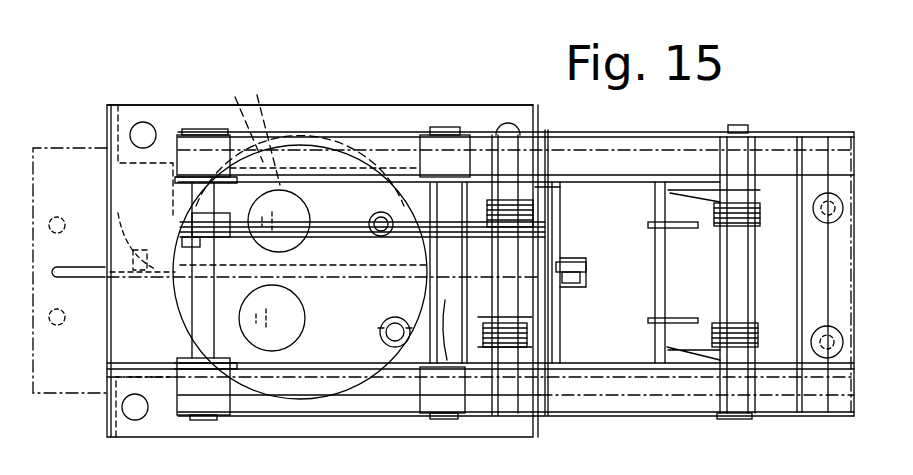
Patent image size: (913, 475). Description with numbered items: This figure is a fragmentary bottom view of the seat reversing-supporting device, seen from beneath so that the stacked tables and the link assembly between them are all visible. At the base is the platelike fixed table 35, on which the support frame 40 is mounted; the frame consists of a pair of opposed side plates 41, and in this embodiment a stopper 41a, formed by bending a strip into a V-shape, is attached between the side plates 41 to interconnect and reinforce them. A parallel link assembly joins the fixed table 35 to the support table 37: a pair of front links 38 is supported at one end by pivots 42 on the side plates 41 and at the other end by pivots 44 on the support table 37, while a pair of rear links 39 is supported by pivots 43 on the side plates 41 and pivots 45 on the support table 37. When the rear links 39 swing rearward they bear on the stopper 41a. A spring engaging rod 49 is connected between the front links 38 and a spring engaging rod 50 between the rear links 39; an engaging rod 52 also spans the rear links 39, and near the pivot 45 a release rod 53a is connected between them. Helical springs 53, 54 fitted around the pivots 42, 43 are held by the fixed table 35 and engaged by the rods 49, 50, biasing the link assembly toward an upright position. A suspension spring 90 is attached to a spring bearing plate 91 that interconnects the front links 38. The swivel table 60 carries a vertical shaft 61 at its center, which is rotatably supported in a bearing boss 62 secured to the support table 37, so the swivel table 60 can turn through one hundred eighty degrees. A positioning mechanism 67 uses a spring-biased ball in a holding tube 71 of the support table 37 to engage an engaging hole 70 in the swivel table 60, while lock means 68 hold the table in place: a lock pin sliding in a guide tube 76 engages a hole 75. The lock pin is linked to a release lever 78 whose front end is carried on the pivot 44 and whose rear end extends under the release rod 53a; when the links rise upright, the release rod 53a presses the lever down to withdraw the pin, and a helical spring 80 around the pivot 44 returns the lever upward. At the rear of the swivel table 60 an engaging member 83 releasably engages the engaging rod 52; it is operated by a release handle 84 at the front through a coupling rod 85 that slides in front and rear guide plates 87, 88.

The fixed table 35 is at (572, 397).
The support table 37 is at (337, 347).
The front links 38 is at (223, 273).
The rear links 39 is at (613, 175).
The support frame 40 is at (901, 413).
The side plates 41 is at (710, 135).
The stopper 41a is at (817, 287).
The pivot 42 is at (530, 245).
The pivot 43 is at (743, 253).
The pivot 44 is at (200, 343).
The pivot 45 is at (440, 343).
The spring engaging rod 49 is at (445, 340).
The spring engaging rod 50 is at (658, 263).
The engaging rod 52 is at (578, 256).
The helical spring 53 is at (540, 213).
The release rod 53a is at (470, 257).
The helical spring 54 is at (760, 216).
The swivel table 60 is at (371, 108).
The vertical shaft 61 is at (320, 268).
The bearing boss 62 is at (300, 235).
The positioning mechanism 67 is at (402, 346).
The lock means 68 is at (388, 235).
The engaging hole 70 is at (235, 117).
The holding tube 71 is at (386, 347).
The hole 75 is at (256, 395).
The guide tube 76 is at (372, 236).
The release lever 78 is at (352, 265).
The helical spring 80 is at (196, 222).
The engaging member 83 is at (582, 277).
The release handle 84 is at (95, 279).
The coupling rod 85 is at (160, 262).
The front guide plate 87 is at (182, 240).
The rear guide plate 88 is at (482, 294).
The suspension spring 90 is at (248, 318).
The spring bearing plate 91 is at (298, 350).